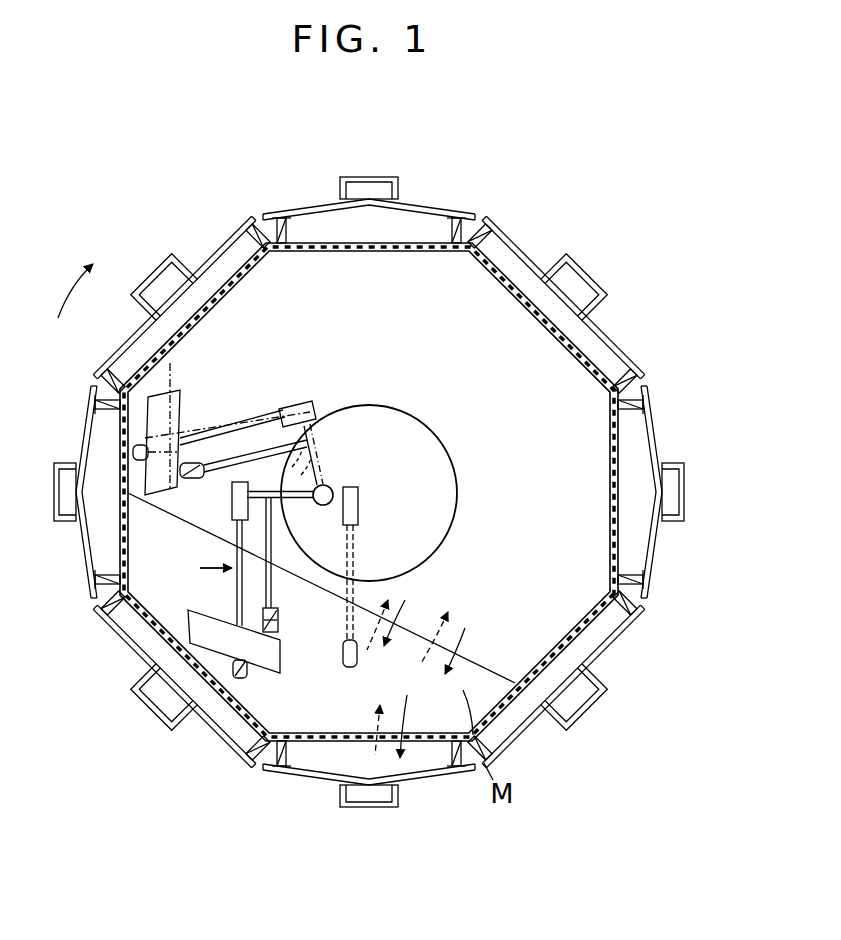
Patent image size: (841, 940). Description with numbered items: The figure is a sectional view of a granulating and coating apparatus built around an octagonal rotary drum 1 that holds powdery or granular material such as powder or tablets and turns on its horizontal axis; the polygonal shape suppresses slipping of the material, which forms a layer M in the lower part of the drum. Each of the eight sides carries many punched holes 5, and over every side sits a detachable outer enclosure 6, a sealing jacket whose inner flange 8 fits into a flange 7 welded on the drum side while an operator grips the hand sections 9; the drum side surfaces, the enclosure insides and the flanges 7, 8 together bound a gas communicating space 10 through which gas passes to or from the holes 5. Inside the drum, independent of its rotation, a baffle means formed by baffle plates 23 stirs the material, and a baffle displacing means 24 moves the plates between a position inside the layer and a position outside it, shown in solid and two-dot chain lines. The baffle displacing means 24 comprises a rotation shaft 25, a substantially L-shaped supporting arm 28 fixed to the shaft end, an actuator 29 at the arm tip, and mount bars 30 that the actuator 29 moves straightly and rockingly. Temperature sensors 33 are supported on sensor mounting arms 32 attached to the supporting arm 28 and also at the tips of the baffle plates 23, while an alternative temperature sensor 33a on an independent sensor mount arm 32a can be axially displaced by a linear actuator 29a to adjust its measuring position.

The rotary drum 1 is at (534, 240).
The holes 5 is at (568, 338).
The outer enclosures 6 is at (660, 450).
The flange 7 is at (630, 381).
The flange 8 is at (641, 405).
The hand sections 9 is at (684, 490).
The gas communicating space 10 is at (633, 513).
The baffle plates 23 is at (205, 640).
The baffle displacing means 24 is at (198, 569).
The rotation shaft 25 is at (335, 493).
The supporting arm 28 is at (302, 482).
The actuator 29 is at (233, 500).
The linear actuator 29a is at (360, 497).
The mount bars 30 is at (235, 596).
The sensor mounting arms 32 is at (279, 612).
The sensor mount arm 32a is at (355, 540).
The temperature sensors 33 is at (247, 673).
The temperature sensor 33a is at (348, 668).